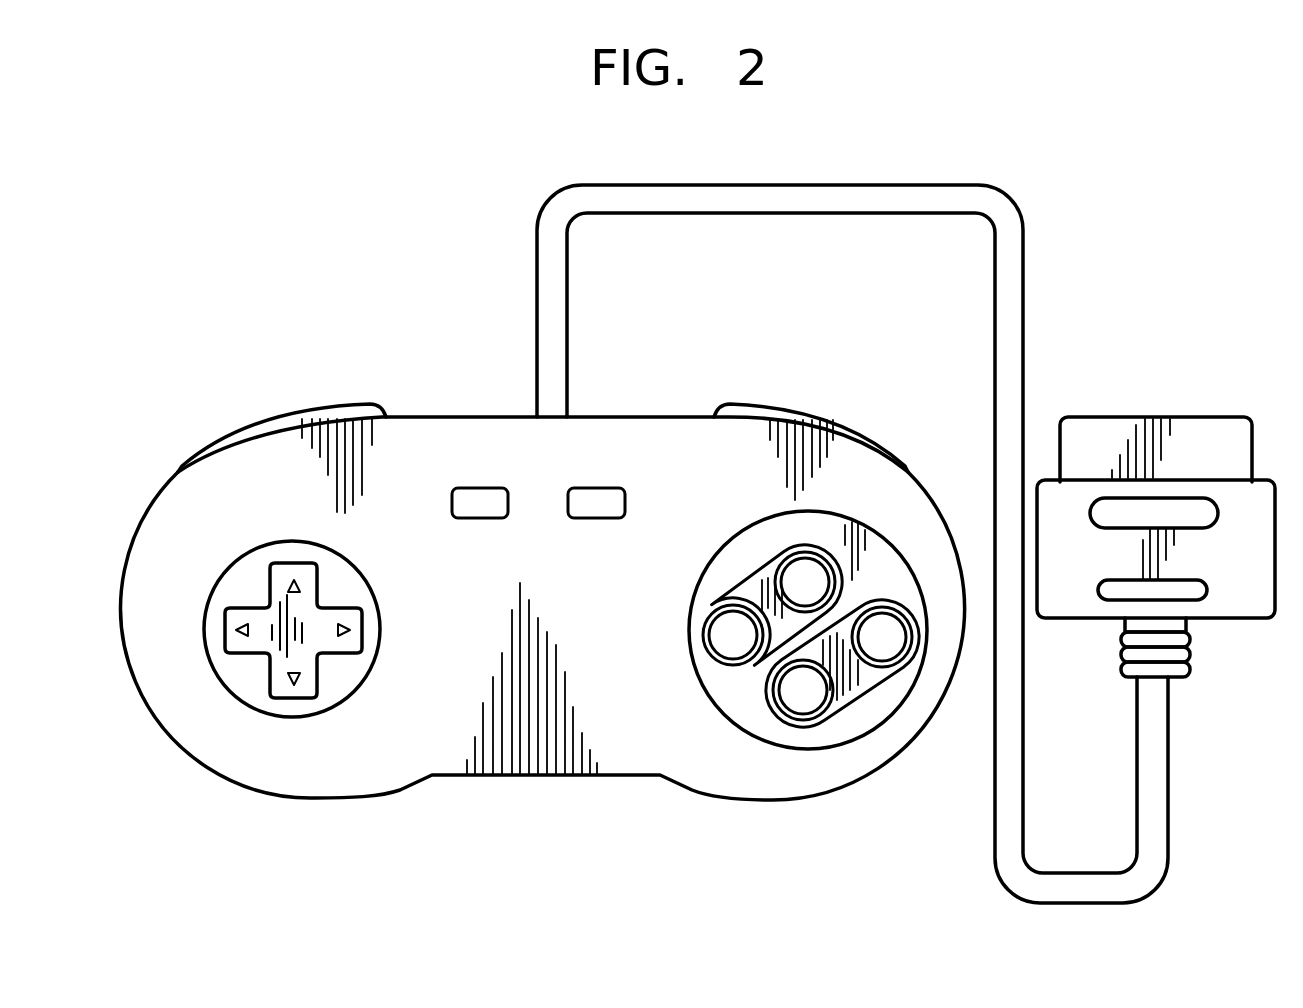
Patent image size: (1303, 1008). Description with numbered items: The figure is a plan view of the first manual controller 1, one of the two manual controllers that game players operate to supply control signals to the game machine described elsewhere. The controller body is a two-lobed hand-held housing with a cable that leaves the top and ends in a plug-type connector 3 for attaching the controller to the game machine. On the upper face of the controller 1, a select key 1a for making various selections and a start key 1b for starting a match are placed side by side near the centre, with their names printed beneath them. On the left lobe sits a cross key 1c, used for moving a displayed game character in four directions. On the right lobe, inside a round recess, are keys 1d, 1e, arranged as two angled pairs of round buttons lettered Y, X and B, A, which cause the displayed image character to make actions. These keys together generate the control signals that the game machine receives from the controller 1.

The first manual controller 1 is at (490, 777).
The select key 1a is at (487, 488).
The start key 1b is at (603, 488).
The cross key 1c is at (362, 668).
The key 1d is at (703, 645).
The key 1e is at (777, 707).
The connector 3 is at (1220, 620).